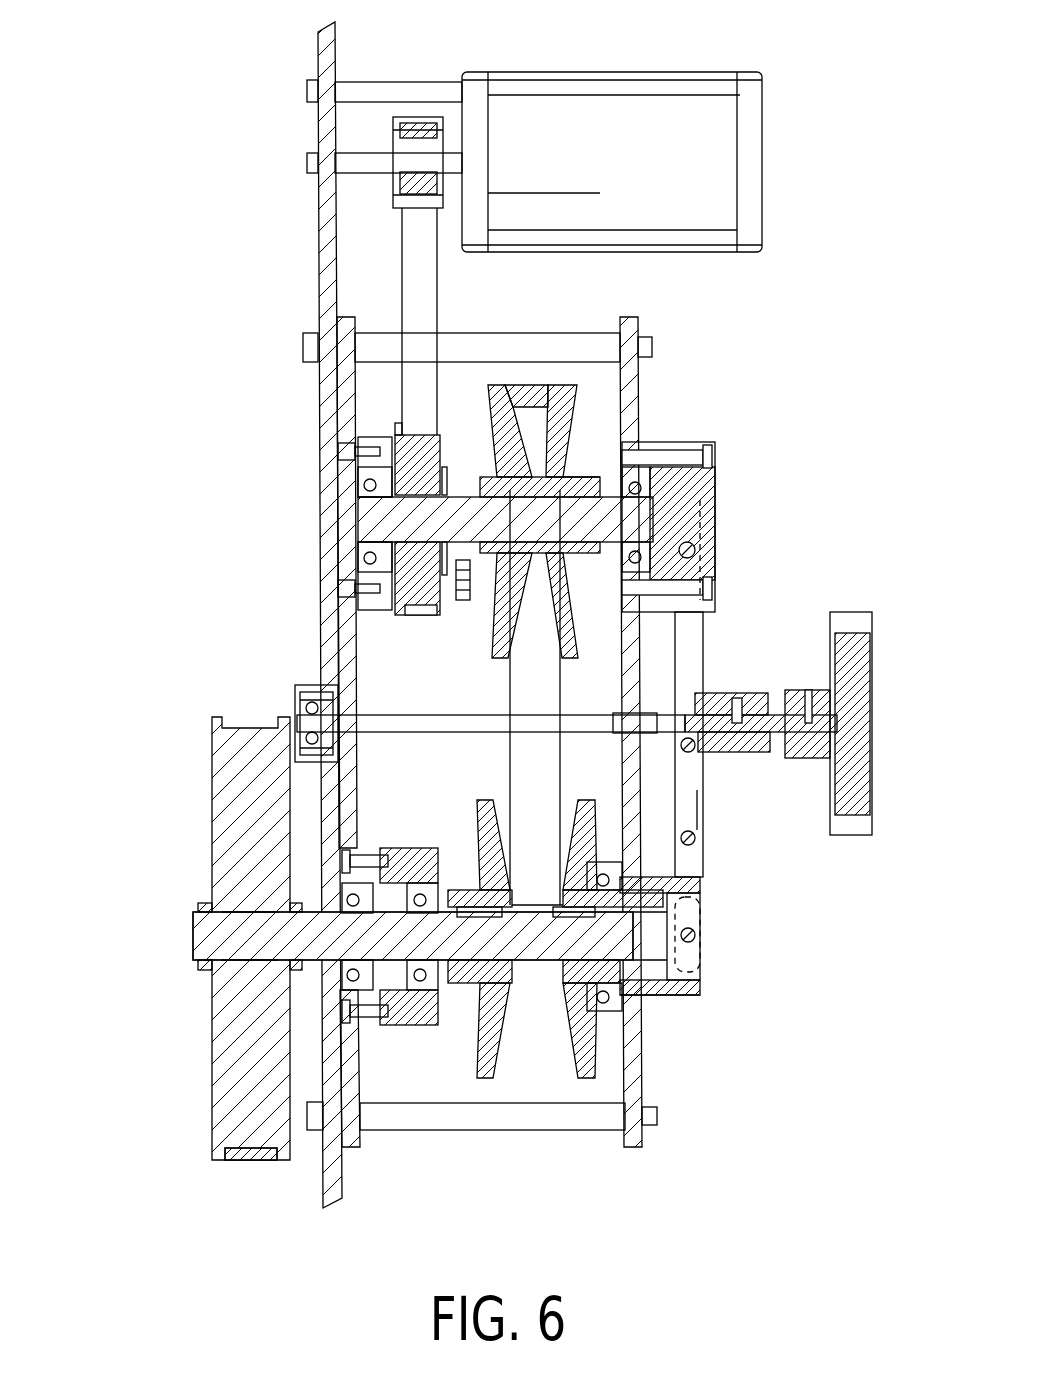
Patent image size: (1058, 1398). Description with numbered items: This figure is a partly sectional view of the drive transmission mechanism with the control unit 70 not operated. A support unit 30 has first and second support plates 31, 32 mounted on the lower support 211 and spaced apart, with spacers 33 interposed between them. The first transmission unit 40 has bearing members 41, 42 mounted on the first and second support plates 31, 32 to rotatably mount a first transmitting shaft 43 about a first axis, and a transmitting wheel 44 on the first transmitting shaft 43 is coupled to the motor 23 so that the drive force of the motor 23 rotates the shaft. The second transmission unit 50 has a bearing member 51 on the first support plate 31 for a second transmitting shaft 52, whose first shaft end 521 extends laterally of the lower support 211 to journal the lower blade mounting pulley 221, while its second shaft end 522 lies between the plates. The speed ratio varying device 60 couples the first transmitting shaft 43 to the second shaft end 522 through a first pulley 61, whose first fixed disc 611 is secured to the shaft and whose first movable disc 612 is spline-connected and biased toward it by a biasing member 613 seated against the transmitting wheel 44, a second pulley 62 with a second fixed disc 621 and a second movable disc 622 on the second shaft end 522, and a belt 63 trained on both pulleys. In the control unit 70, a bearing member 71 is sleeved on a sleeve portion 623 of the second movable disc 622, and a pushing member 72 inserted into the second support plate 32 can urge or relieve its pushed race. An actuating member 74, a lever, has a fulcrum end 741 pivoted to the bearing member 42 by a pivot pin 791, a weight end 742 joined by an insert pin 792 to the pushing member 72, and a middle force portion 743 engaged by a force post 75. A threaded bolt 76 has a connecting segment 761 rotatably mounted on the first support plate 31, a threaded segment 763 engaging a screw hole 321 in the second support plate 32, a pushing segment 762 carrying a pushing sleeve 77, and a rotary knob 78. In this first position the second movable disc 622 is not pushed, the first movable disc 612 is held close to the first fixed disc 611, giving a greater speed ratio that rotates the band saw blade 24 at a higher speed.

The lower support 211 is at (323, 58).
The motor 23 is at (660, 80).
The speed ratio varying device 60 is at (501, 372).
The spacer 33 is at (548, 333).
The first support plate 31 is at (347, 377).
The second support plate 32 is at (632, 330).
The support unit 30 is at (658, 373).
The first transmission unit 40 is at (378, 420).
The bearing member 41 is at (368, 470).
The transmitting wheel 44 is at (368, 560).
The first transmitting shaft 43 is at (360, 518).
The bearing member 42 is at (687, 446).
The pivot pin 791 is at (690, 542).
The fulcrum end 741 is at (718, 553).
The first pulley 61 is at (567, 420).
The first movable disc 612 is at (478, 398).
The first fixed disc 611 is at (564, 432).
The biasing member 613 is at (470, 595).
The threaded bolt 76 is at (430, 732).
The screw hole 321 is at (648, 712).
The connecting segment 761 is at (310, 686).
The threaded segment 763 is at (642, 724).
The pushing segment 762 is at (773, 740).
The pushing sleeve 77 is at (806, 688).
The rotary knob 78 is at (865, 650).
The control unit 70 is at (762, 684).
The actuating member 74 is at (703, 840).
The force post 75 is at (692, 752).
The middle force portion 743 is at (697, 820).
The lower blade mounting pulley 221 is at (225, 752).
The band saw blade 24 is at (260, 1165).
The second transmitting shaft 52 is at (192, 950).
The first shaft end 521 is at (247, 955).
The second transmission unit 50 is at (180, 930).
The bearing member 51 is at (386, 1035).
The second pulley 62 is at (482, 1030).
The belt 63 is at (562, 1075).
The second fixed disc 621 is at (540, 990).
The second movable disc 622 is at (598, 1030).
The sleeve portion 623 is at (637, 997).
The pushing member 72 is at (673, 990).
The weight end 742 is at (703, 957).
The insert pin 792 is at (702, 936).
The second shaft end 522 is at (643, 992).
The bearing member 71 is at (643, 996).